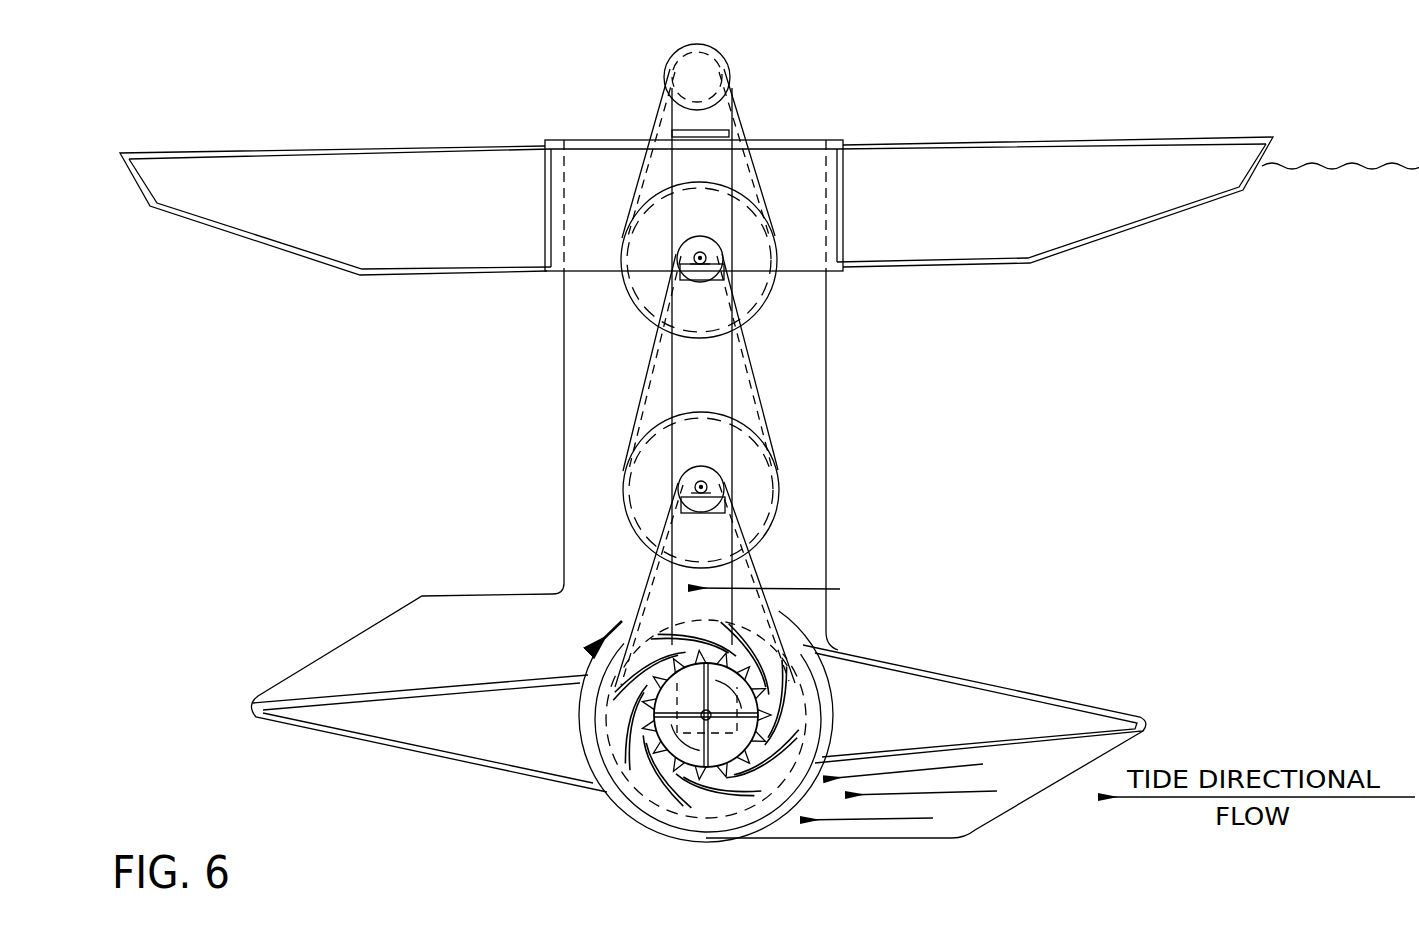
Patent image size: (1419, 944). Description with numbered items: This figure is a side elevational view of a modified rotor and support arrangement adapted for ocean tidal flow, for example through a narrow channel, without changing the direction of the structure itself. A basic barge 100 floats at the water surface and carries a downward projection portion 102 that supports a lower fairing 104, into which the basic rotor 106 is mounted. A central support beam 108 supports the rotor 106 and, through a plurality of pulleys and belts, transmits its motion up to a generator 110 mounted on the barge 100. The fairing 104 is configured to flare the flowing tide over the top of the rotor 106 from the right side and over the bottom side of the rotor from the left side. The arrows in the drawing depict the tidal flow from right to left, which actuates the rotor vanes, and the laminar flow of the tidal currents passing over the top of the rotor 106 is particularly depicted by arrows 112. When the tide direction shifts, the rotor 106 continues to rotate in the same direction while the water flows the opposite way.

The barge 100 is at (992, 170).
The downward projection portion 102 is at (800, 425).
The lower fairing 104 is at (942, 708).
The rotor 106 is at (775, 652).
The central support beam 108 is at (713, 368).
The generator 110 is at (720, 60).
The arrows 112 is at (747, 583).